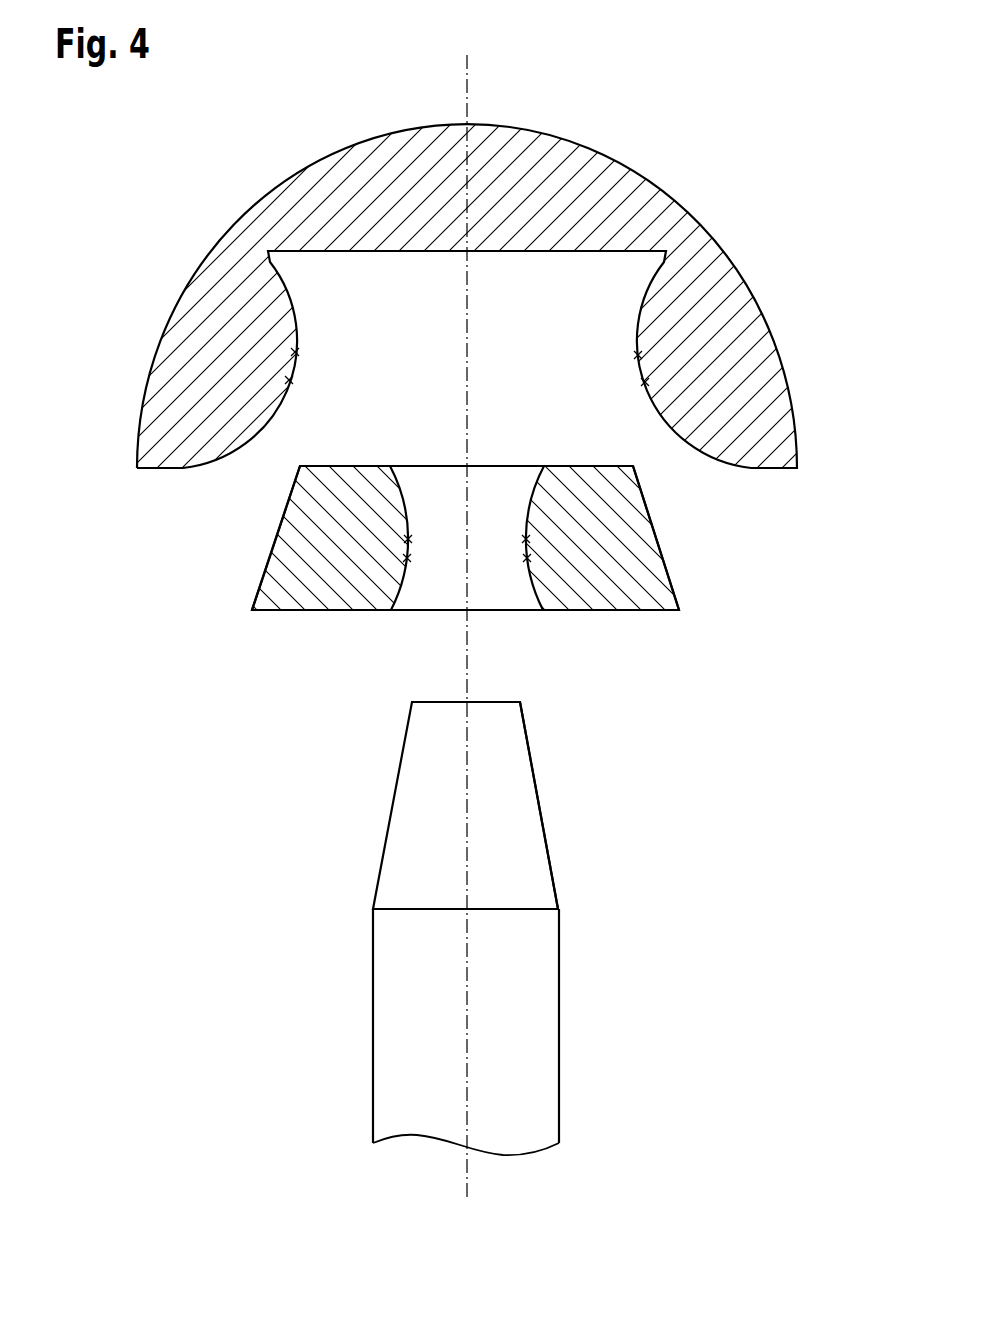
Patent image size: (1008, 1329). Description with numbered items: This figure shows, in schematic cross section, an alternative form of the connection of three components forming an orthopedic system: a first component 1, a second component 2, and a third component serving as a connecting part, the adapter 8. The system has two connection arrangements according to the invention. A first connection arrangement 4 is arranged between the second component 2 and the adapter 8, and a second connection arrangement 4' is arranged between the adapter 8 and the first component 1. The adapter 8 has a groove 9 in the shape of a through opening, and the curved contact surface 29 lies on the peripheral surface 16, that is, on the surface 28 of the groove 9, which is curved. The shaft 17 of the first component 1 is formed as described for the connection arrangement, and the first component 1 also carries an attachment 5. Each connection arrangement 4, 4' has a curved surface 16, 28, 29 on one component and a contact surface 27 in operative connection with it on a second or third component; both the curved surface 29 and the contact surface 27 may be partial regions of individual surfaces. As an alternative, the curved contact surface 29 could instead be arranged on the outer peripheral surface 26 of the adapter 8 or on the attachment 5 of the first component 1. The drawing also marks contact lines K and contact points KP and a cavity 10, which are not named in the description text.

The first component 1 is at (413, 930).
The second component 2 is at (532, 210).
The first connection arrangement 4 is at (834, 299).
The second connection arrangement 4' is at (598, 689).
The attachment 5 is at (435, 848).
The adapter 8 is at (608, 560).
The groove 9 is at (437, 593).
The cavity 10 is at (467, 375).
The peripheral surface 16 is at (467, 375).
The shaft 17 is at (339, 1062).
The outer peripheral surface 26 is at (259, 535).
The contact surface 27 is at (664, 517).
The surface of the groove 28 is at (467, 375).
The curved contact surface 29 is at (633, 289).
The contact line K is at (297, 352).
The contact point KP is at (291, 380).